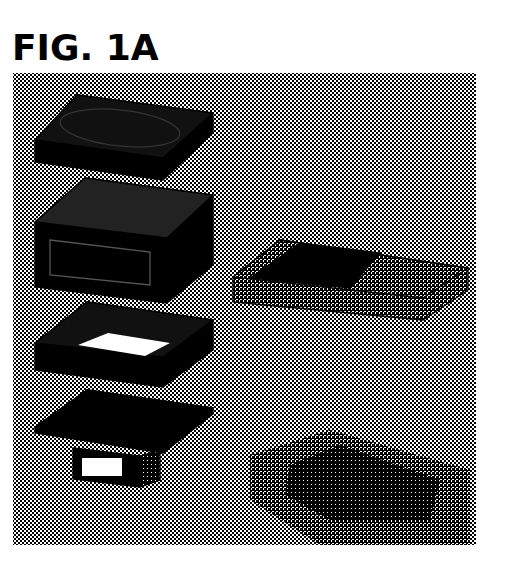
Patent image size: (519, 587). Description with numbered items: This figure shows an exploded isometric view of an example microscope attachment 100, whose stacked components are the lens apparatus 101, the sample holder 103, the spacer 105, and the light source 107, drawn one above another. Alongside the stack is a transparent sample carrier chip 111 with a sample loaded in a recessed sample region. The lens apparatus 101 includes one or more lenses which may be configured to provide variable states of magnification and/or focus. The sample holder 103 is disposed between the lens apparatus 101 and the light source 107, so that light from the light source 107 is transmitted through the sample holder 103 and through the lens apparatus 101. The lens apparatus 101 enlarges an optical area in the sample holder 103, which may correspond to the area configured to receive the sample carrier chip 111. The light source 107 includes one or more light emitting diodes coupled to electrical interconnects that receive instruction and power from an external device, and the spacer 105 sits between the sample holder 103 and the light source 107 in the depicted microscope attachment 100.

The microscope attachment 100 is at (42, 96).
The lens apparatus 101 is at (392, 112).
The sample holder 103 is at (380, 194).
The spacer 105 is at (318, 350).
The light source 107 is at (373, 420).
The sample carrier chip 111 is at (470, 238).